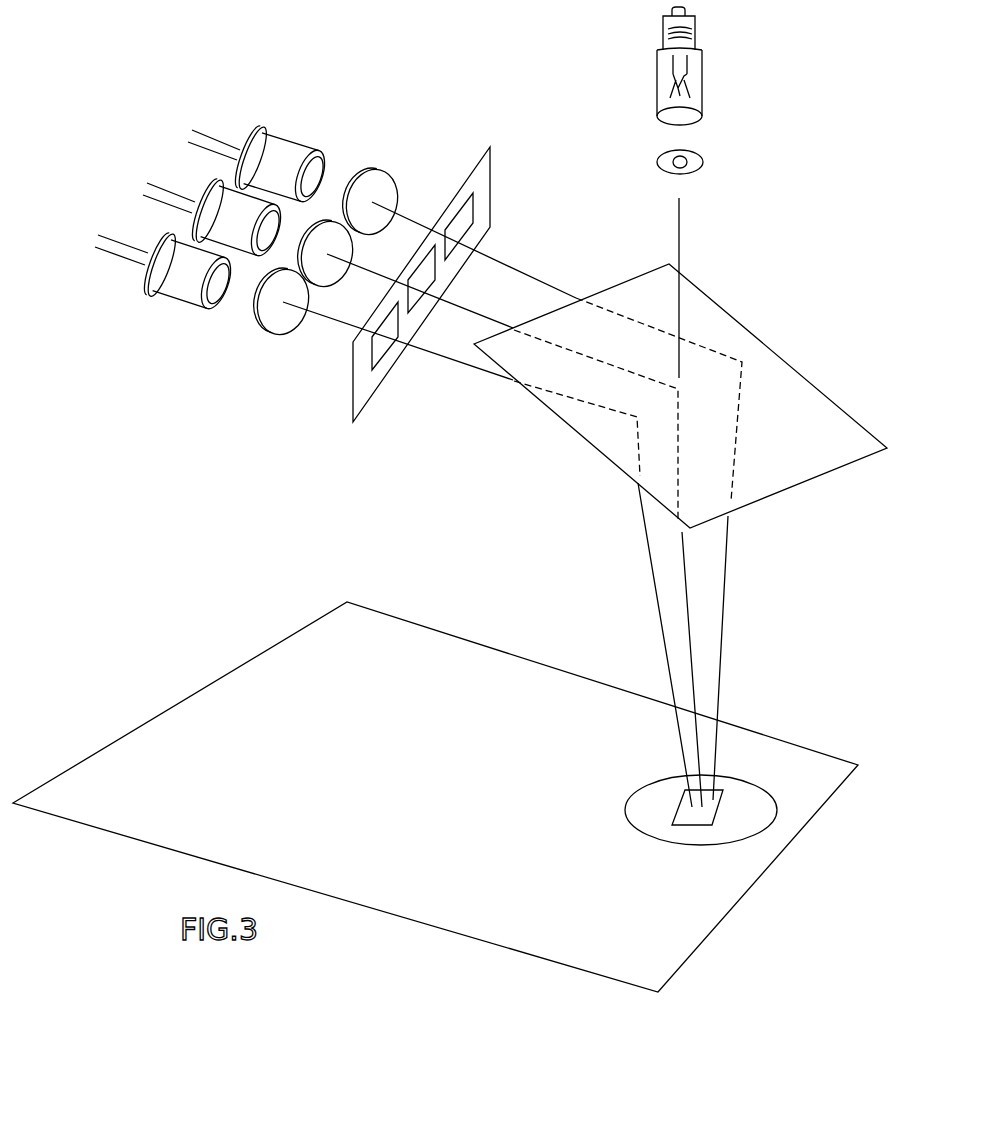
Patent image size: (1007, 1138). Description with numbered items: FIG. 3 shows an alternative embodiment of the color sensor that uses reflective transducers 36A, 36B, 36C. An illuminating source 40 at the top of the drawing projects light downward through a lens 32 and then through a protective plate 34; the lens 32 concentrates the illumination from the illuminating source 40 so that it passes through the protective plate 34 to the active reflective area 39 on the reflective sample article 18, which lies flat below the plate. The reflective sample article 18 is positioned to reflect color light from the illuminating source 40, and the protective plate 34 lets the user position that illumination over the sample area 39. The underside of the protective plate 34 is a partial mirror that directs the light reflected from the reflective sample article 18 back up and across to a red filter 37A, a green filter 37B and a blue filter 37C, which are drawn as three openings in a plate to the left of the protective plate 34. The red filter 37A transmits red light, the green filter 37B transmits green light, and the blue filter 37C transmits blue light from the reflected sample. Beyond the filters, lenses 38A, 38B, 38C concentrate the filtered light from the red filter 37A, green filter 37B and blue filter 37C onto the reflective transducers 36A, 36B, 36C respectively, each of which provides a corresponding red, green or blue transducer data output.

The reflective sample article 18 is at (702, 825).
The lens 32 is at (705, 147).
The protective plate 34 is at (789, 498).
The reflective transducer 36A is at (175, 258).
The reflective transducer 36B is at (225, 210).
The reflective transducer 36C is at (277, 148).
The red filter 37A is at (377, 348).
The green filter 37B is at (425, 292).
The blue filter 37C is at (471, 194).
The lens 38A is at (285, 335).
The lens 38B is at (342, 280).
The lens 38C is at (397, 187).
The active reflective area 39 is at (777, 817).
The illuminating source 40 is at (702, 72).